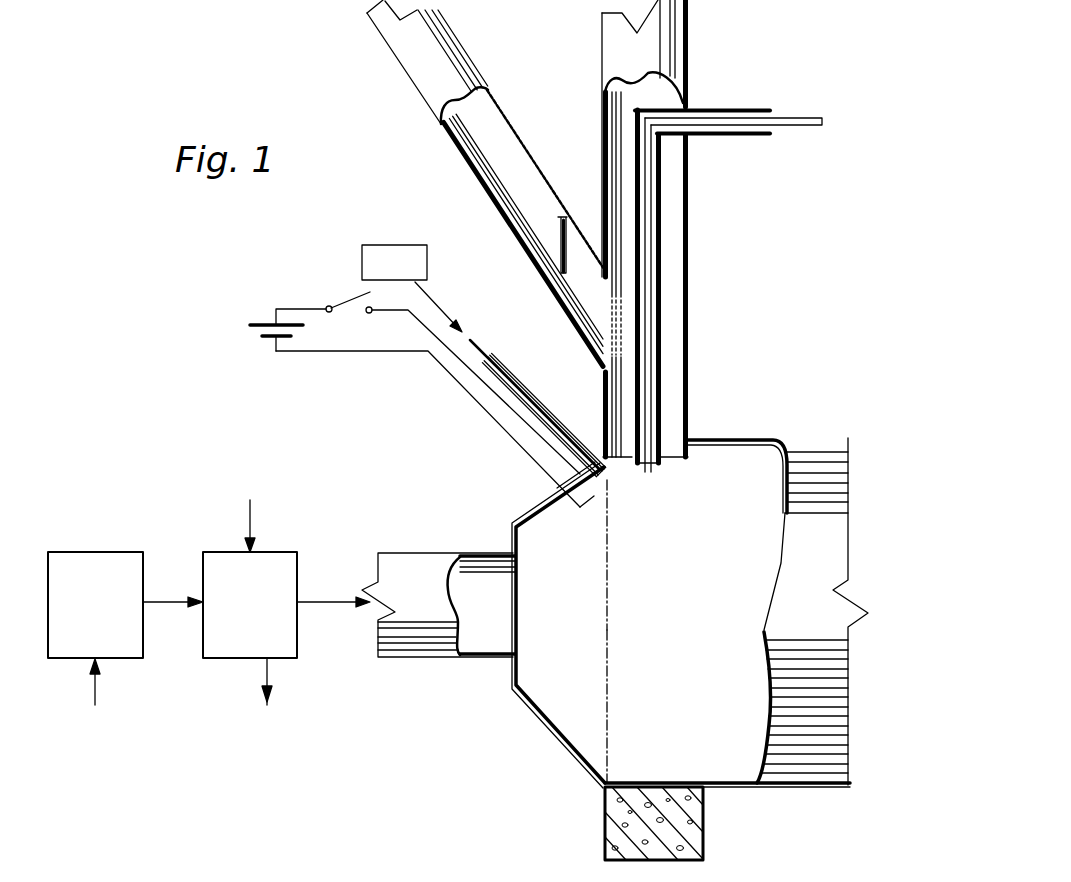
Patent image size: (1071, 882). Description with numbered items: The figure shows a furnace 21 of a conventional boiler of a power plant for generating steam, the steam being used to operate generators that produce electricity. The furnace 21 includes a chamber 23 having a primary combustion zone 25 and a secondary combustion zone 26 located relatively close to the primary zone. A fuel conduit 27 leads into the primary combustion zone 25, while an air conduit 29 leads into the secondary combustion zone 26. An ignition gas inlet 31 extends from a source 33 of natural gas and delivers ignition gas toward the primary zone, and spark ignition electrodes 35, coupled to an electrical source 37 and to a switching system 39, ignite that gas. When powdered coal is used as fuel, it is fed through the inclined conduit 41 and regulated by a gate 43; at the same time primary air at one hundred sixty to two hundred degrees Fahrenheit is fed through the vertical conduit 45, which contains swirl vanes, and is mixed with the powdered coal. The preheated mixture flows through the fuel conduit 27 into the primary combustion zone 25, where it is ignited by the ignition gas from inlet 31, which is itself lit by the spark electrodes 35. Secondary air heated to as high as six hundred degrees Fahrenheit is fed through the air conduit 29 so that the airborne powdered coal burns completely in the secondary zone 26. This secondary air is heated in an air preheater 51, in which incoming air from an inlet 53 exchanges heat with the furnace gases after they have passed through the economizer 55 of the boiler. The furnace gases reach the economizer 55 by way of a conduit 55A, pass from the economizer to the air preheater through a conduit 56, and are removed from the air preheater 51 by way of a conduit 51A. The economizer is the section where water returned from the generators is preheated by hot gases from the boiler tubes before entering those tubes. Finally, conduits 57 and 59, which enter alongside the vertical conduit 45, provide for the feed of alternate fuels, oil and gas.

The furnace 21 is at (742, 800).
The chamber 23 is at (537, 722).
The primary combustion zone 25 is at (627, 495).
The secondary combustion zone 26 is at (643, 620).
The fuel conduit 27 is at (690, 410).
The air conduit 29 is at (411, 658).
The ignition gas inlet 31 is at (548, 408).
The source of natural gas 33 is at (395, 245).
The spark ignition electrodes 35 is at (515, 423).
The electrical source 37 is at (260, 332).
The switching system 39 is at (348, 300).
The conduit 41 is at (410, 37).
The gate 43 is at (560, 247).
The conduit 45 is at (602, 60).
The air preheater 51 is at (233, 658).
The conduit 51A is at (270, 672).
The inlet 53 is at (253, 510).
The economizer 55 is at (83, 552).
The conduit 55A is at (98, 688).
The conduit 56 is at (157, 600).
The conduit 57 is at (785, 118).
The conduit 59 is at (710, 135).